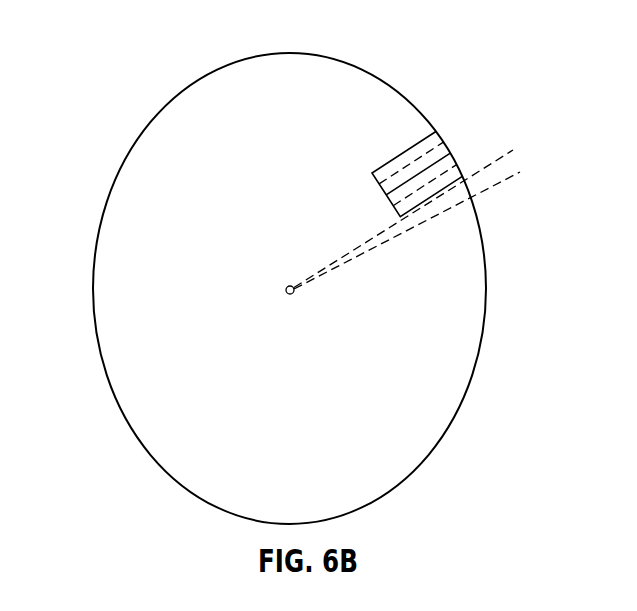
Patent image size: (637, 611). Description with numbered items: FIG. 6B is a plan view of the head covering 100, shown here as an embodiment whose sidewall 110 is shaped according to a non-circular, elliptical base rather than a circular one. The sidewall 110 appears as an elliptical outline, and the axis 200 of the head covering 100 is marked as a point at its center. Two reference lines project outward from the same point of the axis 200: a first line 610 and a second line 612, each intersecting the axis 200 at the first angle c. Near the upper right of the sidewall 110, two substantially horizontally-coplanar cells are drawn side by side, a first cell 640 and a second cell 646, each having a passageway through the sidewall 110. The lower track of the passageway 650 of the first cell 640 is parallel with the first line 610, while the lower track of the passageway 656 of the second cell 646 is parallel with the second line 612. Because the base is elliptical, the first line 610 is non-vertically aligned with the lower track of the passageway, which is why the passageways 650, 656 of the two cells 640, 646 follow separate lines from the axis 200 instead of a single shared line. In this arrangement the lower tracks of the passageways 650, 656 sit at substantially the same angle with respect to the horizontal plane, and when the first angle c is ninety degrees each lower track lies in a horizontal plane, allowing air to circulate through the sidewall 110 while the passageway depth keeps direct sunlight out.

The head covering 100 is at (92, 58).
The sidewall 110 is at (146, 128).
The axis 200 is at (286, 288).
The first line 610 is at (502, 181).
The second line 612 is at (516, 151).
The first cell 640 is at (402, 158).
The second cell 646 is at (400, 132).
The passageway 650 is at (452, 162).
The passageway 656 is at (418, 158).